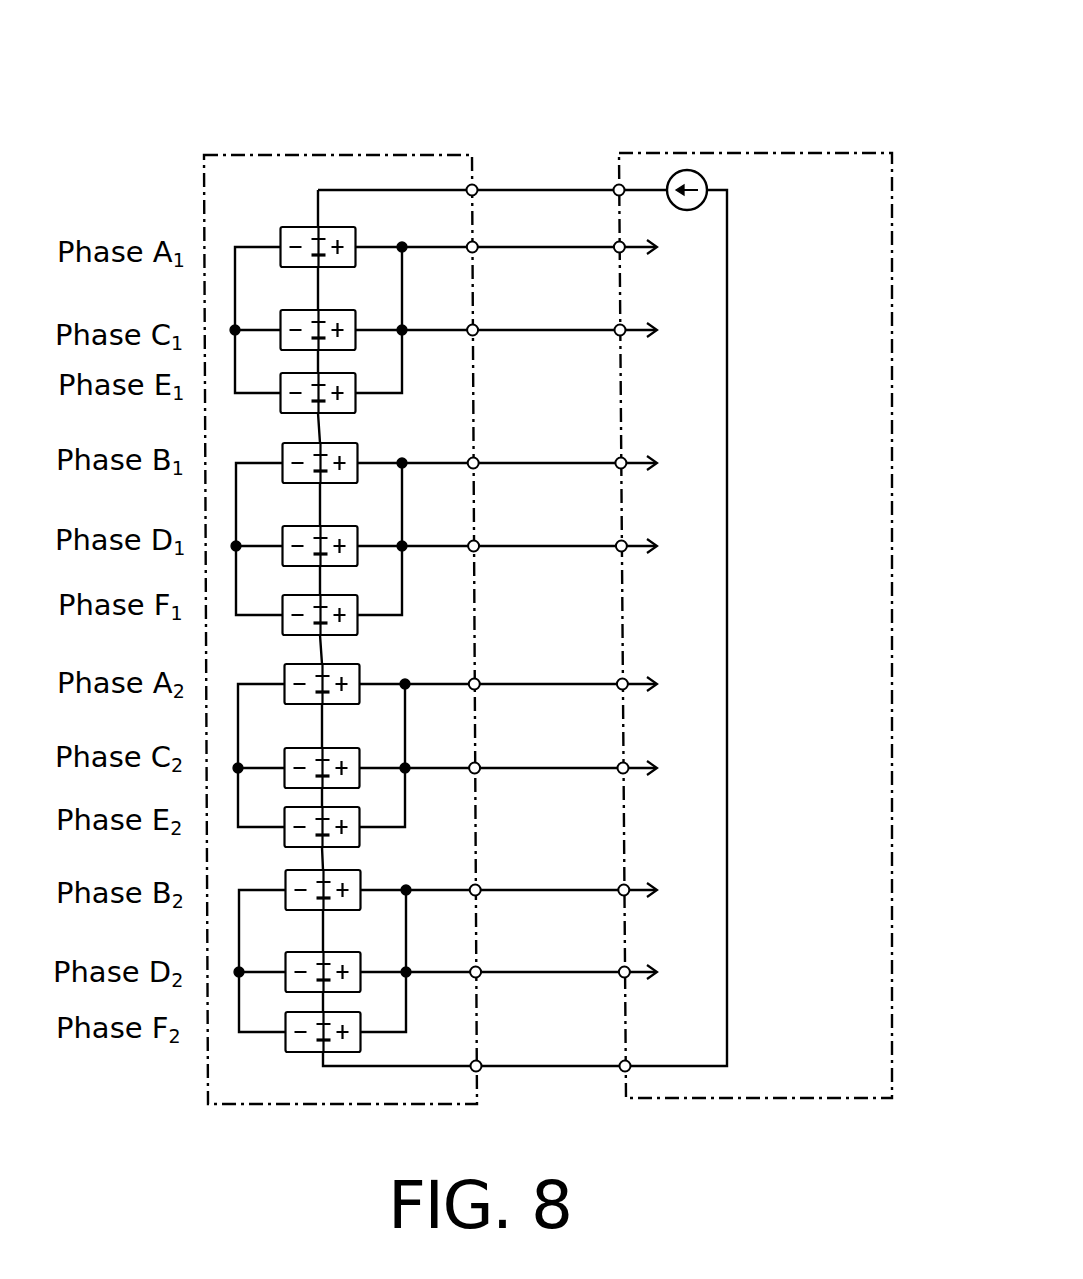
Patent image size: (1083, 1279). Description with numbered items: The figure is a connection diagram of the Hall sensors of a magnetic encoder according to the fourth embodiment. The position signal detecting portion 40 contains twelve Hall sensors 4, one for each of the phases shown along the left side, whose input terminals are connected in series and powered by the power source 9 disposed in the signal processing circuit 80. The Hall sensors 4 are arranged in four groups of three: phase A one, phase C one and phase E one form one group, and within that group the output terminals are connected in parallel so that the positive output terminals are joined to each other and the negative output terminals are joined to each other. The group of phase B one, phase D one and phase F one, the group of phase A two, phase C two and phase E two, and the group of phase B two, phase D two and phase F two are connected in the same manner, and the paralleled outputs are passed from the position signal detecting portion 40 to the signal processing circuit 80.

The position signal detecting portion 40 is at (240, 155).
The Hall sensor 4 is at (308, 198).
The power source 9 is at (690, 170).
The signal processing circuit 80 is at (750, 153).